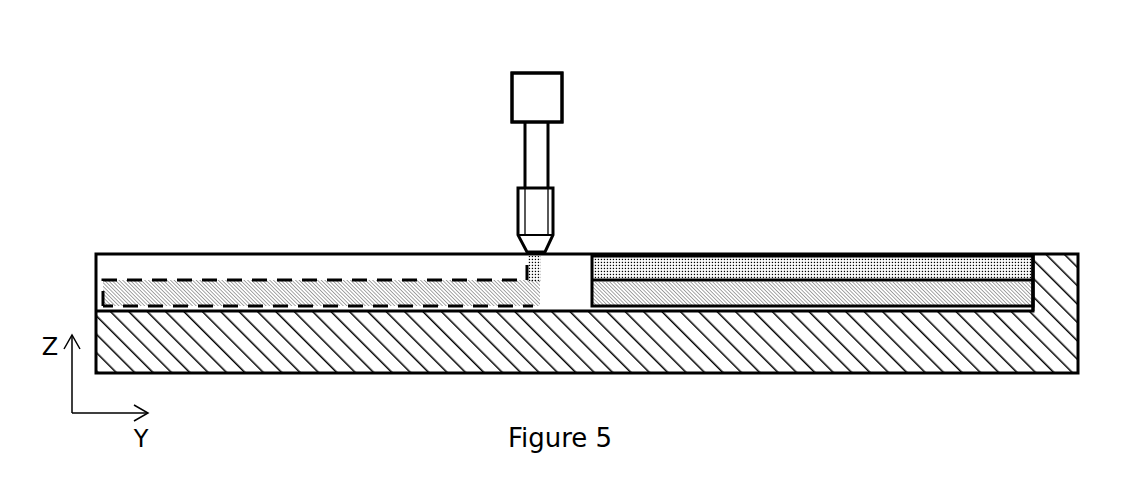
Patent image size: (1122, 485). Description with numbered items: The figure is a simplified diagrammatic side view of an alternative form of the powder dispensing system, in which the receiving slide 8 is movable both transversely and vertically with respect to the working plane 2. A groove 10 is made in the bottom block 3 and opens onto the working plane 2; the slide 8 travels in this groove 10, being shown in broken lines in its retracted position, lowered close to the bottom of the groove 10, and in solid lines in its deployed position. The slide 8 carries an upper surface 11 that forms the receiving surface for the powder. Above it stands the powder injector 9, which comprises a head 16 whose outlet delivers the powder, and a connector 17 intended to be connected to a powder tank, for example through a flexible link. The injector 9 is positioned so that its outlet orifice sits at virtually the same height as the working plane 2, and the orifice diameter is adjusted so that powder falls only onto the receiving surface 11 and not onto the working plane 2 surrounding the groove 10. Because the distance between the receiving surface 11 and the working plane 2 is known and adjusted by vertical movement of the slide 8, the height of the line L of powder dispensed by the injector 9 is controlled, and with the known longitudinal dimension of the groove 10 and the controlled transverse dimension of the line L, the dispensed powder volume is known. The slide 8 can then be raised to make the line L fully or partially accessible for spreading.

The working plane 2 is at (1041, 254).
The bottom block 3 is at (987, 373).
The slide 8 is at (333, 279).
The powder injector 9 is at (511, 113).
The groove 10 is at (231, 266).
The upper surface 11 is at (737, 254).
The head 16 is at (553, 193).
The connector 17 is at (562, 83).
The line of powder L is at (830, 254).